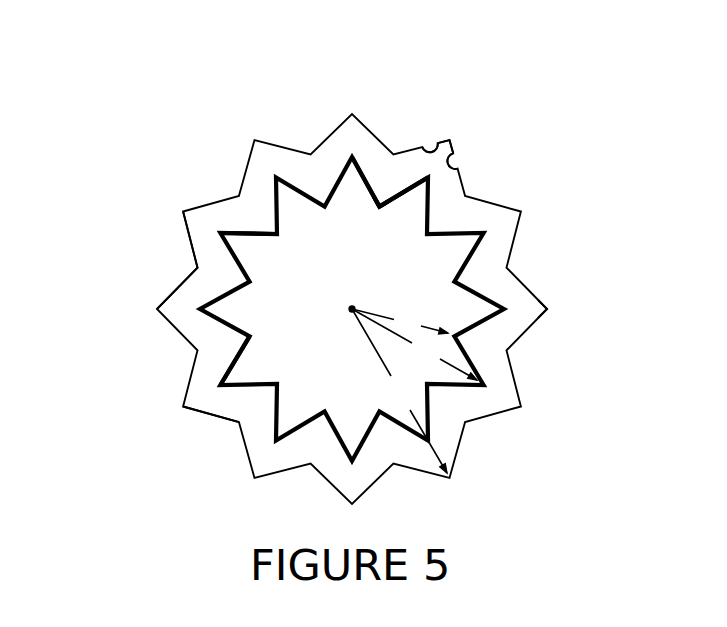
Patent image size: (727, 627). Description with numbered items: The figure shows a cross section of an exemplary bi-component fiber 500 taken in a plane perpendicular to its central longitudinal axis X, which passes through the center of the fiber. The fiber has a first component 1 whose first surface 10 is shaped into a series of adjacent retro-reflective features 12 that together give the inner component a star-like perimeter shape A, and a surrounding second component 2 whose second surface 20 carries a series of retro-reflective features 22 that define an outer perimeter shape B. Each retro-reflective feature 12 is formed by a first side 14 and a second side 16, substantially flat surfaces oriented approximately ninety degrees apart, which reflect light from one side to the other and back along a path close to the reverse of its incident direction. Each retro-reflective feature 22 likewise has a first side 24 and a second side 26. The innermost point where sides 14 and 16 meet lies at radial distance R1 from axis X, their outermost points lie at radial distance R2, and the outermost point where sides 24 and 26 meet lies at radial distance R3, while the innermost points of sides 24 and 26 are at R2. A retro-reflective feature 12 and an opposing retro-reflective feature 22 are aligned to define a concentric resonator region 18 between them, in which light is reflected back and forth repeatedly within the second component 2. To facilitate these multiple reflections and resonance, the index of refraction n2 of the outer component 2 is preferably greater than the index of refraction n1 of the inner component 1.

The bi-component fiber 500 is at (171, 83).
The first surface 10 is at (237, 230).
The second surface 20 is at (172, 295).
The first component 1 is at (257, 243).
The second component 2 is at (197, 277).
The retro-reflective feature 12 is at (381, 213).
The first side 14 is at (372, 187).
The second side 16 is at (402, 192).
The concentric resonator region 18 is at (525, 305).
The retro-reflective feature 22 is at (452, 136).
The first side 24 is at (438, 143).
The second side 26 is at (441, 162).
The perimeter shape A is at (226, 371).
The perimeter shape B is at (198, 412).
The longitudinal axis X is at (352, 346).
The radial distance R1 is at (400, 323).
The radial distance R2 is at (414, 344).
The radial distance R3 is at (399, 391).
The index of refraction n1 is at (278, 267).
The index of refraction n2 is at (223, 267).